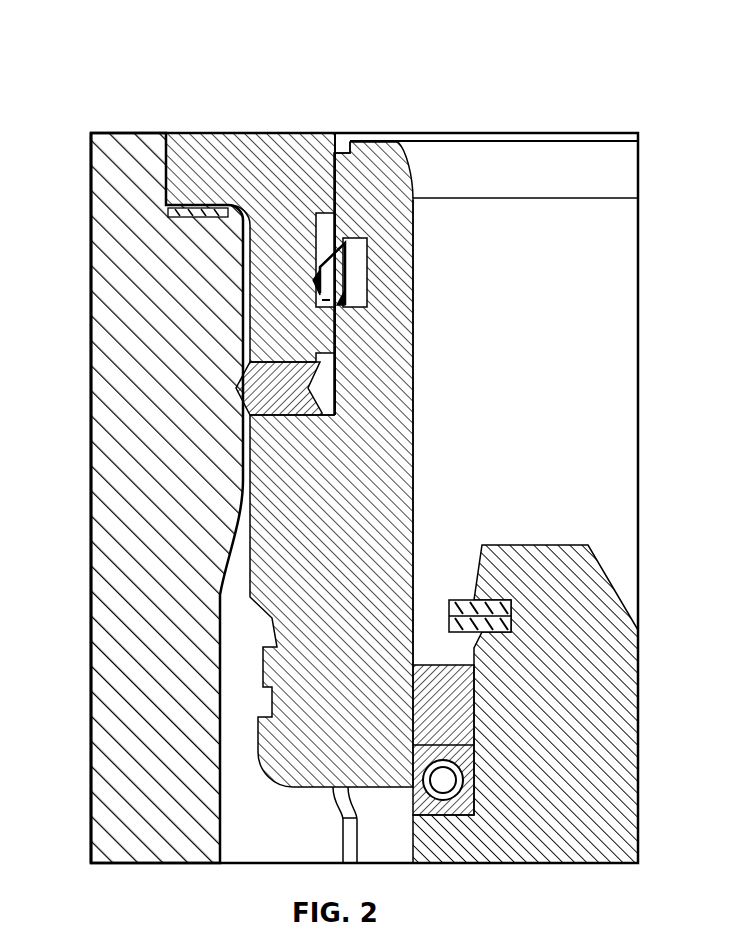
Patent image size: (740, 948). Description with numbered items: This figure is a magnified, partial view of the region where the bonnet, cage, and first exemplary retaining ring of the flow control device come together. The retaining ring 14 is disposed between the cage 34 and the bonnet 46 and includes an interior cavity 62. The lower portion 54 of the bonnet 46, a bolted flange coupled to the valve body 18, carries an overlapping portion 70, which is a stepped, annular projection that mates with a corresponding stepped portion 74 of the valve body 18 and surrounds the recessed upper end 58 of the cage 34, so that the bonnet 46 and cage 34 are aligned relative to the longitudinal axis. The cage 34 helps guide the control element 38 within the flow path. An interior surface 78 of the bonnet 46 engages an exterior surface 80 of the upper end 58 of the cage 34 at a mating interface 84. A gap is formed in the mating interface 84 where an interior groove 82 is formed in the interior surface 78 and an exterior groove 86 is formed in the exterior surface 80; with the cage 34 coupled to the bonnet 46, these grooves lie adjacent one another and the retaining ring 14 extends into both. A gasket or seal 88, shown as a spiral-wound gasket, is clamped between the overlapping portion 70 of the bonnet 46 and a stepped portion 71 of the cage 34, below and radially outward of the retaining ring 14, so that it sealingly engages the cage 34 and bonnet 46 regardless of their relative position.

The first exemplary retaining ring 14 is at (340, 252).
The valve body 18 is at (90, 388).
The cage 34 is at (413, 525).
The control element 38 is at (597, 797).
The bonnet 46 is at (233, 143).
The lower portion of the bonnet 54 is at (241, 207).
The upper end of the cage 58 is at (226, 434).
The interior cavity 62 is at (335, 277).
The overlapping portion of the bonnet 70 is at (270, 176).
The stepped portion of the cage 71 is at (262, 455).
The stepped portion of the valve body 74 is at (110, 173).
The interior surface of the bonnet 78 is at (340, 152).
The exterior surface of the upper end of the cage 80 is at (333, 390).
The interior groove 82 is at (320, 242).
The mating interface 84 is at (335, 190).
The exterior groove 86 is at (335, 277).
The gasket or seal 88 is at (245, 388).